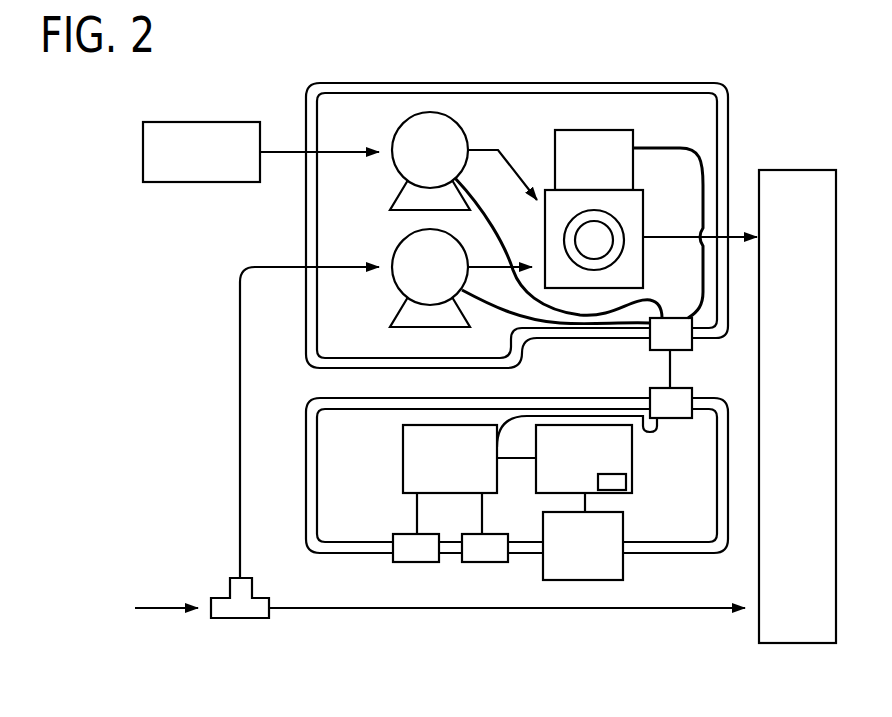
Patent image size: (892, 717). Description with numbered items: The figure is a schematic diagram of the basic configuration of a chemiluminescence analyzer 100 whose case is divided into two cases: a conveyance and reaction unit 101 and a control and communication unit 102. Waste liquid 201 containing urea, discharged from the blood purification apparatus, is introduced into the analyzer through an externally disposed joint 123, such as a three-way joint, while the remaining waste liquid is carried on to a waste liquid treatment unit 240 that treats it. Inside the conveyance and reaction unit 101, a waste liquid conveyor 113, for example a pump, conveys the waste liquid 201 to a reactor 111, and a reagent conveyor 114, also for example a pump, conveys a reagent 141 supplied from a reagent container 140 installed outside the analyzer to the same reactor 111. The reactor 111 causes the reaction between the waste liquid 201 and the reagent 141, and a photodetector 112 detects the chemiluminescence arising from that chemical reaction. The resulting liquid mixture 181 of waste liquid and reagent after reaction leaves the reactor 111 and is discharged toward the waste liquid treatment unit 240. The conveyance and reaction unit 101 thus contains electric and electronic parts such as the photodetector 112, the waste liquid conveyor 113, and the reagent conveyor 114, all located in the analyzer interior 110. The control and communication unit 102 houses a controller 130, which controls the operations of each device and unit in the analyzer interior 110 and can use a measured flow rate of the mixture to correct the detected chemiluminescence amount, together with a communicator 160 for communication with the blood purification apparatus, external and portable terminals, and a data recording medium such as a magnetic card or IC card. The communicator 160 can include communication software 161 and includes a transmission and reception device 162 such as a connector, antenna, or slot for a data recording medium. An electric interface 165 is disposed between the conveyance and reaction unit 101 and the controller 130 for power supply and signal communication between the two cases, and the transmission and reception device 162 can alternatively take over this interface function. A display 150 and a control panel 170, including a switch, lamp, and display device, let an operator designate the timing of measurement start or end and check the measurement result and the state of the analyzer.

The chemiluminescence analyzer 100 is at (603, 68).
The conveyance and reaction unit 101 is at (697, 67).
The control and communication unit 102 is at (709, 394).
The analyzer interior 110 is at (523, 128).
The reactor 111 is at (643, 264).
The photodetector 112 is at (610, 170).
The waste liquid conveyor 113 is at (447, 282).
The reagent conveyor 114 is at (447, 165).
The joint 123 is at (265, 597).
The controller 130 is at (467, 472).
The reagent container 140 is at (220, 165).
The reagent 141 is at (327, 151).
The display 150 is at (410, 564).
The communicator 160 is at (602, 473).
The communication software 161 is at (626, 482).
The transmission and reception device 162 is at (626, 568).
The electric interface 165 is at (650, 392).
The control panel 170 is at (482, 564).
The liquid mixture 181 is at (664, 237).
The waste liquid 201 is at (288, 610).
The waste liquid treatment unit 240 is at (815, 422).